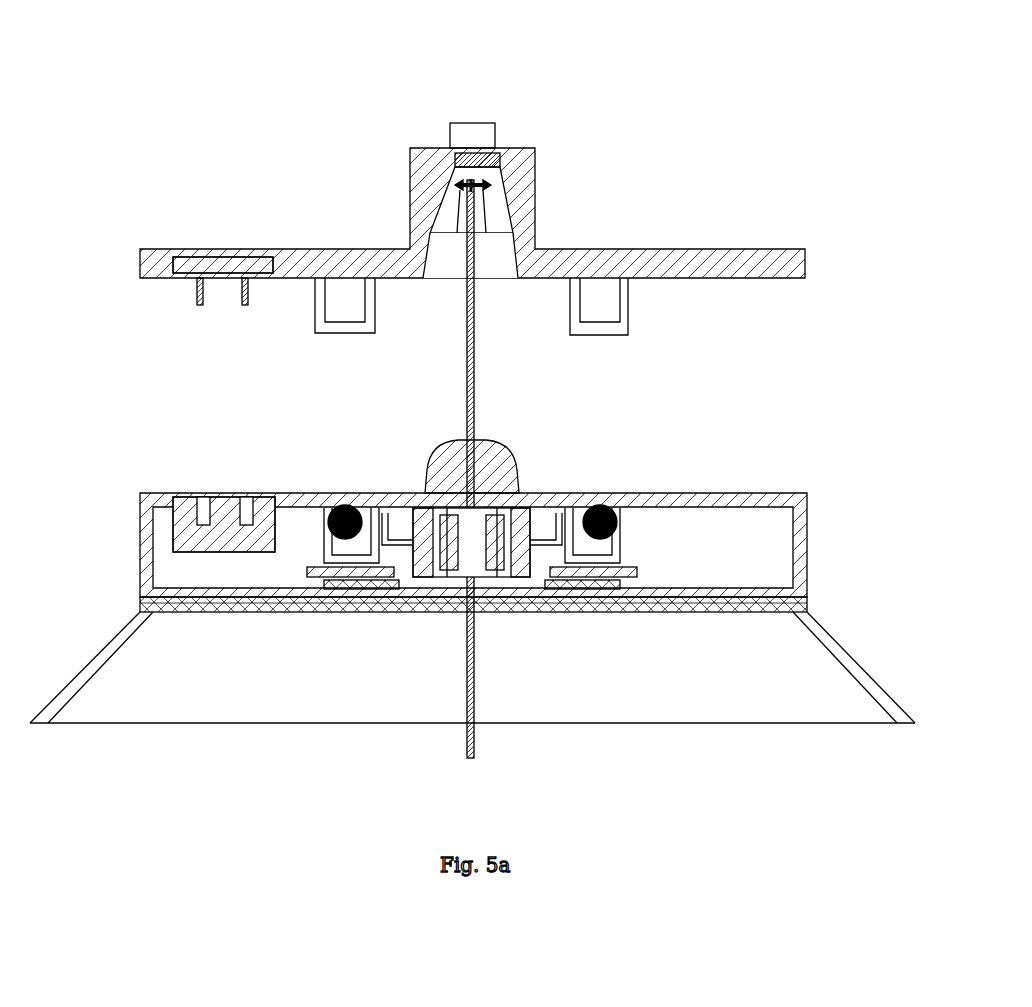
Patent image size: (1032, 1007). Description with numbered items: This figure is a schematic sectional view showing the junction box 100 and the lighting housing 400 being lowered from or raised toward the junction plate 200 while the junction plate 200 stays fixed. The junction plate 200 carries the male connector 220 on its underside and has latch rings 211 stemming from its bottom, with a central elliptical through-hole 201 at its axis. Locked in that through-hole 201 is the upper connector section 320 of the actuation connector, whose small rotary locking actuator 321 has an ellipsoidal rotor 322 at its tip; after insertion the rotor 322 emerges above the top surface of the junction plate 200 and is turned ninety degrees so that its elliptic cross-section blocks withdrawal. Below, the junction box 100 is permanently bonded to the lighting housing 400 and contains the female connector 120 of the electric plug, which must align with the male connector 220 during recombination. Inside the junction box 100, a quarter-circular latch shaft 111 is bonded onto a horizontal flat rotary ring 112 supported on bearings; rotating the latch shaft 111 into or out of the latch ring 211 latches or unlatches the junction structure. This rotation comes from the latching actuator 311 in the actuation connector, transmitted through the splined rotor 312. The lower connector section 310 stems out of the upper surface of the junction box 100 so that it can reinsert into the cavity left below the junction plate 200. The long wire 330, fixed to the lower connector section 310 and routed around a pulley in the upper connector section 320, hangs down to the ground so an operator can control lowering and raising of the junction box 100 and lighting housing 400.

The junction box 100 is at (145, 550).
The latch shaft 111 is at (610, 506).
The rotary ring 112 is at (625, 567).
The female connector 120 is at (225, 513).
The junction plate 200 is at (157, 260).
The through-hole 201 is at (467, 184).
The latch ring 211 is at (622, 322).
The male connector 220 is at (237, 265).
The lower connector section 310 is at (445, 475).
The latching actuator 311 is at (457, 567).
The rotor 312 is at (523, 533).
The upper connector section 320 is at (490, 218).
The rotary locking actuator 321 is at (480, 163).
The rotor 322 is at (455, 135).
The long wire 330 is at (475, 742).
The lighting housing 400 is at (110, 650).